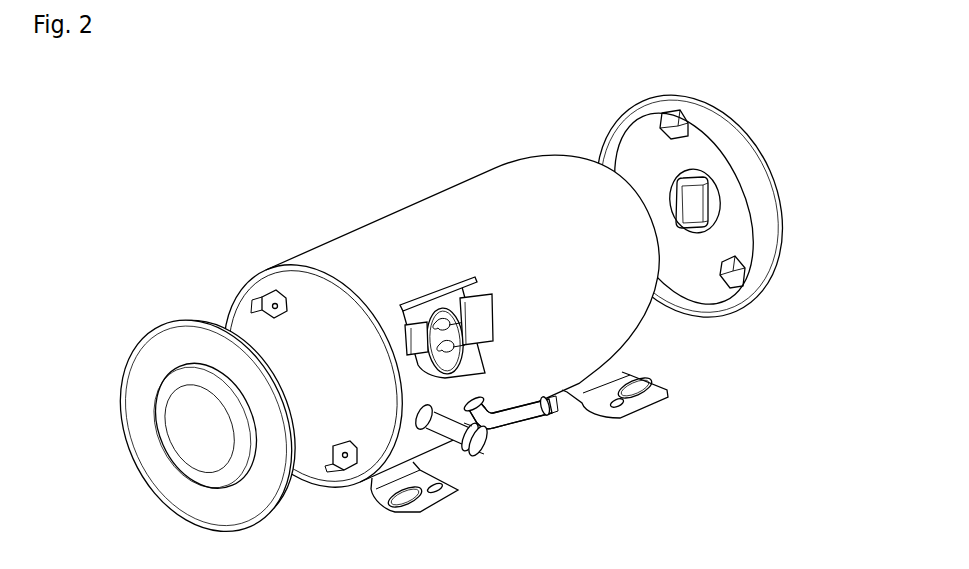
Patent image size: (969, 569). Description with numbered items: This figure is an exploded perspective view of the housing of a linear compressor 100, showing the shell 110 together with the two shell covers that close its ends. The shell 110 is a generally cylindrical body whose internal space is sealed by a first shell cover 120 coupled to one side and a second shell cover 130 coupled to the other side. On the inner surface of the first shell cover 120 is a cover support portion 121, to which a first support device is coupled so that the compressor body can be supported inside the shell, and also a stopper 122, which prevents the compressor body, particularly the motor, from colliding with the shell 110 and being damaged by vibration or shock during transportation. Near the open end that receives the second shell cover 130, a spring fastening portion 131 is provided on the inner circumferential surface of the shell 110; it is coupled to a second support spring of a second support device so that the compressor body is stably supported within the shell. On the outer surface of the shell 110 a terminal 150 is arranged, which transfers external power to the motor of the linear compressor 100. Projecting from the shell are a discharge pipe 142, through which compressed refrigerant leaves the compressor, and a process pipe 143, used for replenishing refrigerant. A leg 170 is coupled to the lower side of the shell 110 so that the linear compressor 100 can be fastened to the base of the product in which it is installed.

The linear compressor 100 is at (298, 223).
The shell 110 is at (357, 240).
The first shell cover 120 is at (748, 128).
The cover support portion 121 is at (705, 200).
The stopper 122 is at (673, 112).
The second shell cover 130 is at (128, 389).
The spring fastening portion 131 is at (264, 296).
The discharge pipe 142 is at (518, 428).
The process pipe 143 is at (452, 452).
The terminal 150 is at (414, 307).
The leg 170 is at (642, 400).